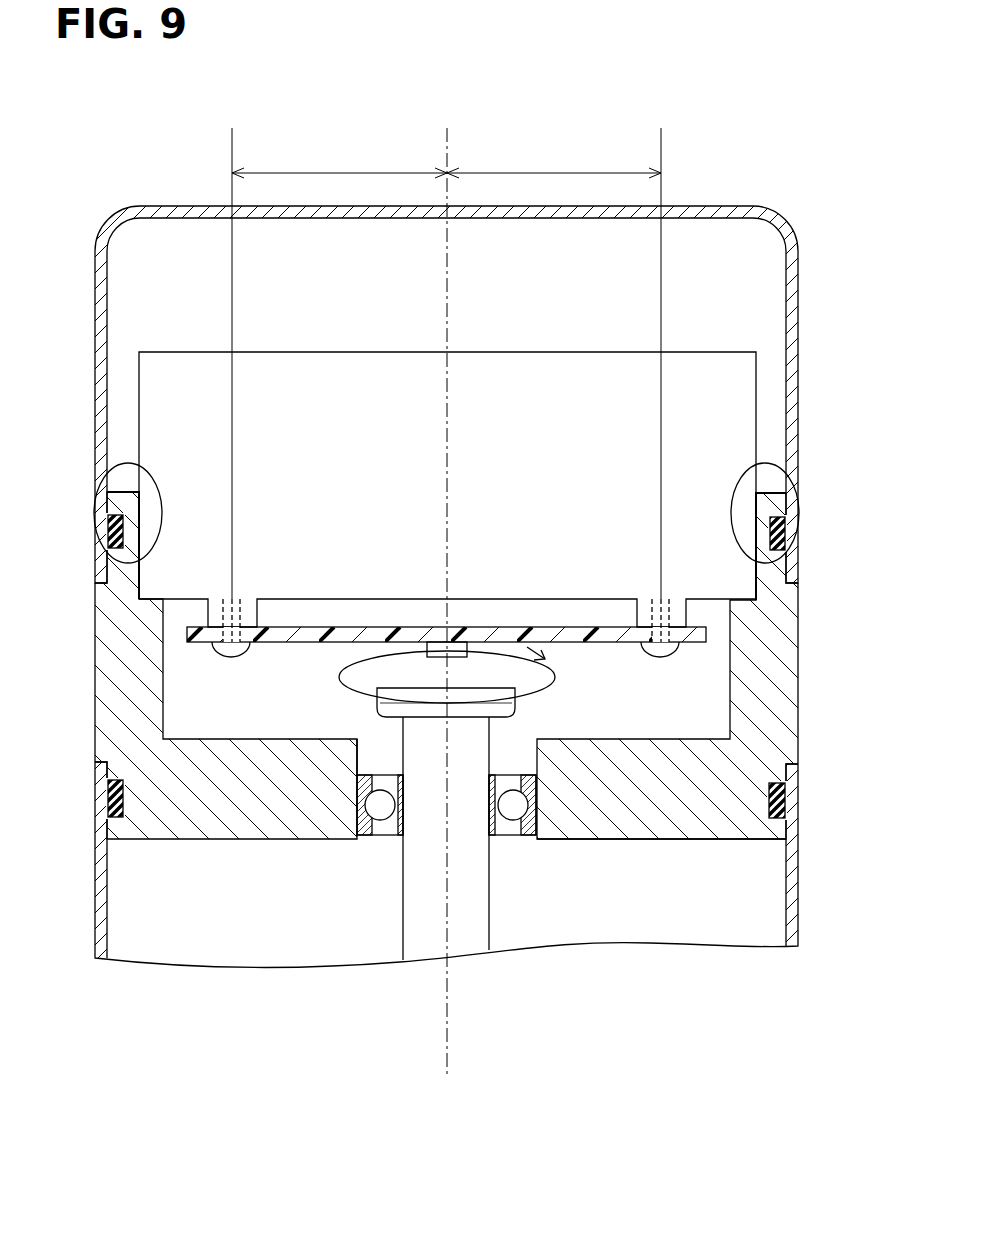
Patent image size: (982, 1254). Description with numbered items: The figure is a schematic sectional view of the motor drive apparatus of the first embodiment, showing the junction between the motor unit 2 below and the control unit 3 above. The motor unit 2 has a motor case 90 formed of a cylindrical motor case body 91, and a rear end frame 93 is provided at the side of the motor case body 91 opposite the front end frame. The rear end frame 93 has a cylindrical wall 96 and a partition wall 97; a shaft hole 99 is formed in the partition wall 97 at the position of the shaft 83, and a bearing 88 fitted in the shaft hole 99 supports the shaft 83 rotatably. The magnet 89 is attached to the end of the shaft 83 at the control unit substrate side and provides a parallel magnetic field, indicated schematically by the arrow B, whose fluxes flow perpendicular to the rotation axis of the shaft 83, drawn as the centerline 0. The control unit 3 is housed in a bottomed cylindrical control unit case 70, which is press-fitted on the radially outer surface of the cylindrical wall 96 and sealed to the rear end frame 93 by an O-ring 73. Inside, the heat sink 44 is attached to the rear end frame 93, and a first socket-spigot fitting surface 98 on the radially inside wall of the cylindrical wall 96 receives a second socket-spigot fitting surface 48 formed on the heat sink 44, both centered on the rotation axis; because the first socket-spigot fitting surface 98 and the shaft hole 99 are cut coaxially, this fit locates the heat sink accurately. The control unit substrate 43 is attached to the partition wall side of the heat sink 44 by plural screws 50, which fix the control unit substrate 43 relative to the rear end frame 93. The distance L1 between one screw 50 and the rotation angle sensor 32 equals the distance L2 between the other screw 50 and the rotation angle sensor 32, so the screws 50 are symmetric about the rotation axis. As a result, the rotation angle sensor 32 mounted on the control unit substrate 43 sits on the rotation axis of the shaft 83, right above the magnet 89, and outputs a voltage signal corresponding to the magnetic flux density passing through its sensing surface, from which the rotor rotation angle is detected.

The motor unit 2 is at (88, 907).
The control unit 3 is at (88, 330).
The rotation axis 0 is at (447, 1050).
The rotation angle sensor 32 is at (462, 658).
The control unit substrate 43 is at (612, 645).
The heat sink 44 is at (706, 380).
The second socket-spigot fitting surface 48 is at (115, 560).
The screw 50 is at (227, 647).
The control unit case 70 is at (792, 329).
The O-ring 73 is at (108, 530).
The shaft 83 is at (424, 925).
The bearing 88 is at (363, 838).
The magnet 89 is at (357, 742).
The motor case 90 is at (803, 903).
The motor case body 91 is at (101, 860).
The rear end frame 93 is at (130, 731).
The cylindrical wall 96 is at (128, 629).
The partition wall 97 is at (200, 820).
The first socket-spigot fitting surface 98 is at (118, 470).
The shaft hole 99 is at (592, 842).
The arrow B is at (375, 690).
The distance L1 is at (339, 164).
The distance L2 is at (554, 164).